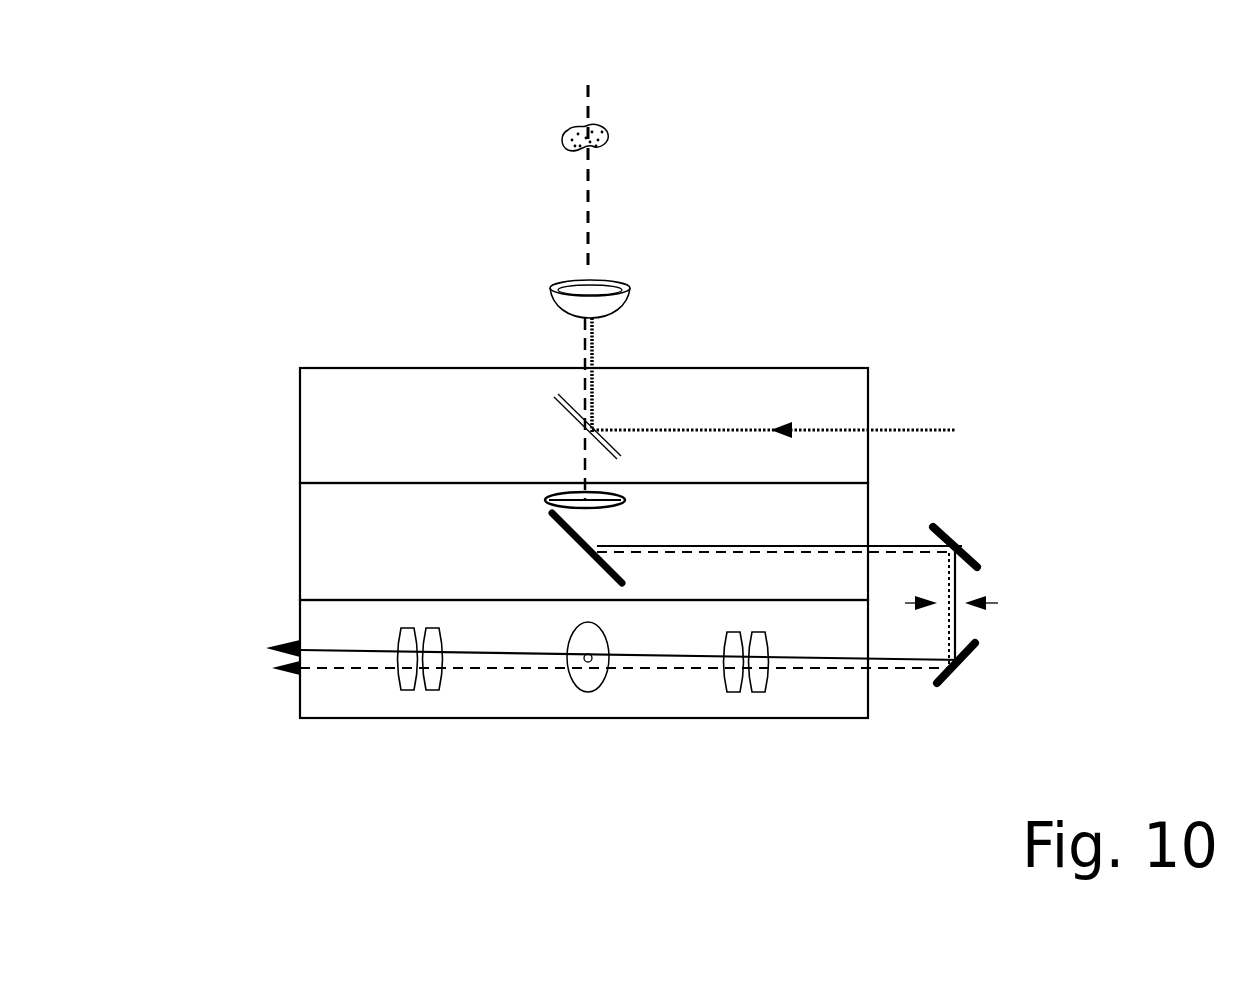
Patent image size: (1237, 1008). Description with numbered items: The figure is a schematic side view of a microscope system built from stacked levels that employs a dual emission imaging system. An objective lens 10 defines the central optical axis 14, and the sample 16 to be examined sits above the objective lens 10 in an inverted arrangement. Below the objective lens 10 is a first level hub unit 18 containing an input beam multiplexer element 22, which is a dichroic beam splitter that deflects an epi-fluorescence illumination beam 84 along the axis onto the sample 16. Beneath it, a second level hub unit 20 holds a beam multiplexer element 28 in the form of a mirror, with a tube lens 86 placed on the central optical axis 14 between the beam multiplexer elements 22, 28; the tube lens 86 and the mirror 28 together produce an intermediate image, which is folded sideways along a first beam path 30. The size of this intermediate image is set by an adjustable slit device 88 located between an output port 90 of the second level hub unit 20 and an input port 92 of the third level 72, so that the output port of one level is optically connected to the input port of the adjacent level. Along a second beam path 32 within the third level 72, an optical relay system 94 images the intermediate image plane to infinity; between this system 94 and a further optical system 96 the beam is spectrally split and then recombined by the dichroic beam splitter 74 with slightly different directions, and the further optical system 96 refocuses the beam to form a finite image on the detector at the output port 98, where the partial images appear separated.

The objective lens 10 is at (614, 291).
The central optical axis 14 is at (592, 98).
The sample 16 is at (612, 140).
The first level hub unit 18 is at (320, 420).
The second level hub unit 20 is at (320, 540).
The input beam multiplexer element 22 is at (578, 430).
The beam multiplexer element 28 is at (580, 548).
The first beam path 30 is at (905, 545).
The second beam path 32 is at (908, 670).
The third level 72 is at (320, 625).
The dichroic beam splitter 74 is at (588, 683).
The epi-fluorescence illumination beam 84 is at (922, 428).
The tube lens 86 is at (640, 503).
The adjustable slit device 88 is at (973, 603).
The output port 90 is at (960, 545).
The input port 92 is at (968, 663).
The optical relay system 94 is at (743, 700).
The further optical system 96 is at (418, 697).
The output port 98 is at (263, 672).